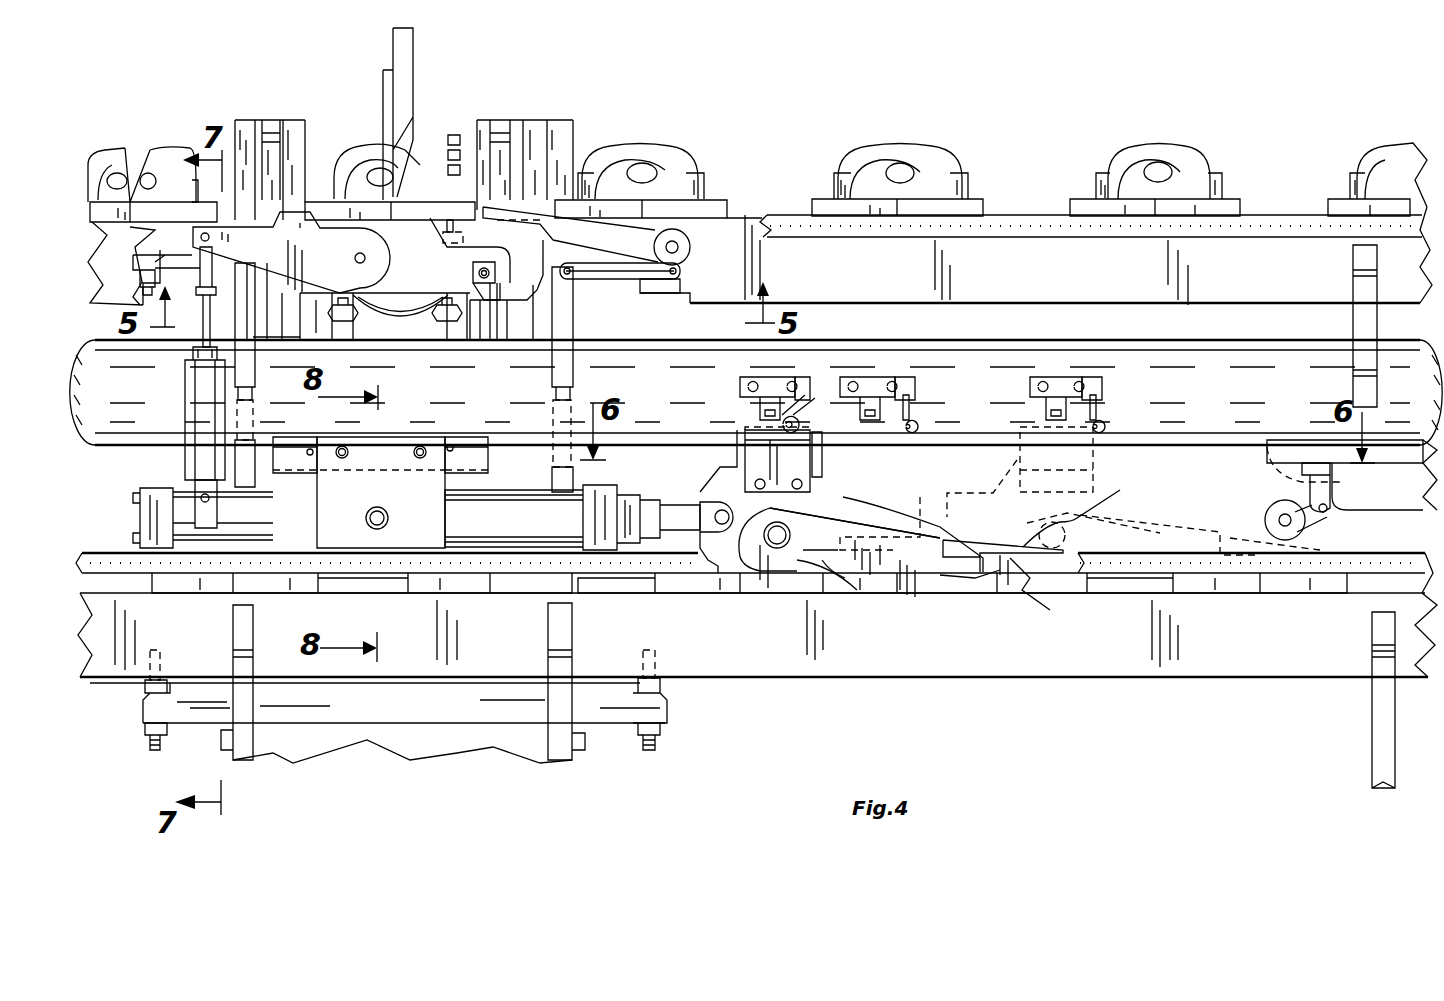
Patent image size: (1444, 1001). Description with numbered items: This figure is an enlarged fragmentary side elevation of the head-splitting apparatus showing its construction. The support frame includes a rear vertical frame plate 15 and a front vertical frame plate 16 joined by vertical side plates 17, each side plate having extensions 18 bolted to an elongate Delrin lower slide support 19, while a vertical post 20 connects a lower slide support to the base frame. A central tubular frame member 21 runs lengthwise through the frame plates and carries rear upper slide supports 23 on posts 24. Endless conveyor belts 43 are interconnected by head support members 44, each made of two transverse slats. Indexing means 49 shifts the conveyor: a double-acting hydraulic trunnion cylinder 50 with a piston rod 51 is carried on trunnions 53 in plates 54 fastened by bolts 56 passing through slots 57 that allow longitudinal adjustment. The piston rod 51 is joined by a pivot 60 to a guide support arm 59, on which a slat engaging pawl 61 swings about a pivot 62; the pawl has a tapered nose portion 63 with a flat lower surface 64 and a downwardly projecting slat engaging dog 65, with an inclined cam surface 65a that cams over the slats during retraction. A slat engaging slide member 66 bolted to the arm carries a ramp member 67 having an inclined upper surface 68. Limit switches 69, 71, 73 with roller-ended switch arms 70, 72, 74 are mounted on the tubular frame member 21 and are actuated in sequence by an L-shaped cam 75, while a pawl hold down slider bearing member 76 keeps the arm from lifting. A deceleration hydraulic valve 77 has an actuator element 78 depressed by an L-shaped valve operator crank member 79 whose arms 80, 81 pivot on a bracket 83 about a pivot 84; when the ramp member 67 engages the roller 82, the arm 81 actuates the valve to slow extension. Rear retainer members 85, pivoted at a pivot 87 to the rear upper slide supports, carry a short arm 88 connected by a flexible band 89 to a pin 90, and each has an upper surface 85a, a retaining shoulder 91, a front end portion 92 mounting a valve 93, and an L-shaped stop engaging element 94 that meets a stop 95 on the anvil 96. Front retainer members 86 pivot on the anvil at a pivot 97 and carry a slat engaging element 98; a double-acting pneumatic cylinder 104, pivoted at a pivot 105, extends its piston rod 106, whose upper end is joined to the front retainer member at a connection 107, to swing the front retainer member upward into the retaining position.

The rear vertical frame plate 15 is at (574, 330).
The front vertical frame plate 16 is at (235, 632).
The vertical side plate 17 is at (450, 726).
The extension 18 is at (153, 708).
The lower slide support 19 is at (1125, 644).
The vertical post 20 is at (1383, 733).
The central tubular frame member 21 is at (1298, 377).
The rear upper slide support 23 is at (1058, 277).
The post 24 is at (1355, 325).
The endless conveyor belt 43 is at (1018, 225).
The head support member 44 is at (735, 214).
The indexing means 49 is at (903, 488).
The double-acting hydraulic trunnion cylinder 50 is at (530, 512).
The piston rod 51 is at (650, 507).
The trunnion 53 is at (367, 514).
The plate 54 is at (426, 516).
The bolt 56 is at (480, 438).
The slot 57 is at (452, 442).
The guide support arm 59 is at (830, 496).
The pivot 60 is at (718, 533).
The slat engaging pawl 61 is at (870, 534).
The pivot 62 is at (776, 548).
The tapered nose portion 63 is at (947, 560).
The flat lower surface 64 is at (965, 585).
The slat engaging dog 65 is at (887, 590).
The inclined cam surface 65a is at (853, 580).
The slat engaging slide member 66 is at (1020, 578).
The ramp member 67 is at (1080, 507).
The inclined upper surface 68 is at (1007, 540).
The limit switch 69 is at (775, 382).
The switch arm 70 is at (803, 390).
The second limit switch 71 is at (898, 383).
The switch arm 72 is at (940, 390).
The third limit switch 73 is at (1100, 381).
The switch arm 74 is at (1137, 393).
The L-shaped cam 75 is at (762, 452).
The pawl hold down slider bearing member 76 is at (822, 444).
The deceleration hydraulic valve 77 is at (1418, 494).
The actuator element 78 is at (1340, 483).
The L-shaped valve operator crank member 79 is at (1328, 543).
The arm 80 is at (1307, 540).
The arm 81 is at (1274, 440).
The roller 82 is at (1268, 507).
The bracket 83 is at (1312, 472).
The pivot 84 is at (1322, 537).
The rear retainer member 85 is at (633, 218).
The upper surface 85a is at (567, 222).
The front retainer member 86 is at (320, 224).
The pivot 87 is at (690, 232).
The short arm 88 is at (682, 262).
The flexible band 89 is at (636, 279).
The pin 90 is at (553, 272).
The retaining shoulder 91 is at (480, 200).
The front end portion 92 is at (461, 245).
The valve 93 is at (443, 240).
The L-shaped stop engaging element 94 is at (490, 303).
The stop 95 is at (490, 262).
The anvil 96 is at (318, 288).
The pivot 97 is at (366, 261).
The slat engaging element 98 is at (293, 215).
The double-acting pneumatic cylinder 104 is at (198, 407).
The pivot 105 is at (211, 498).
The piston rod 106 is at (200, 314).
The pin 107 is at (209, 237).